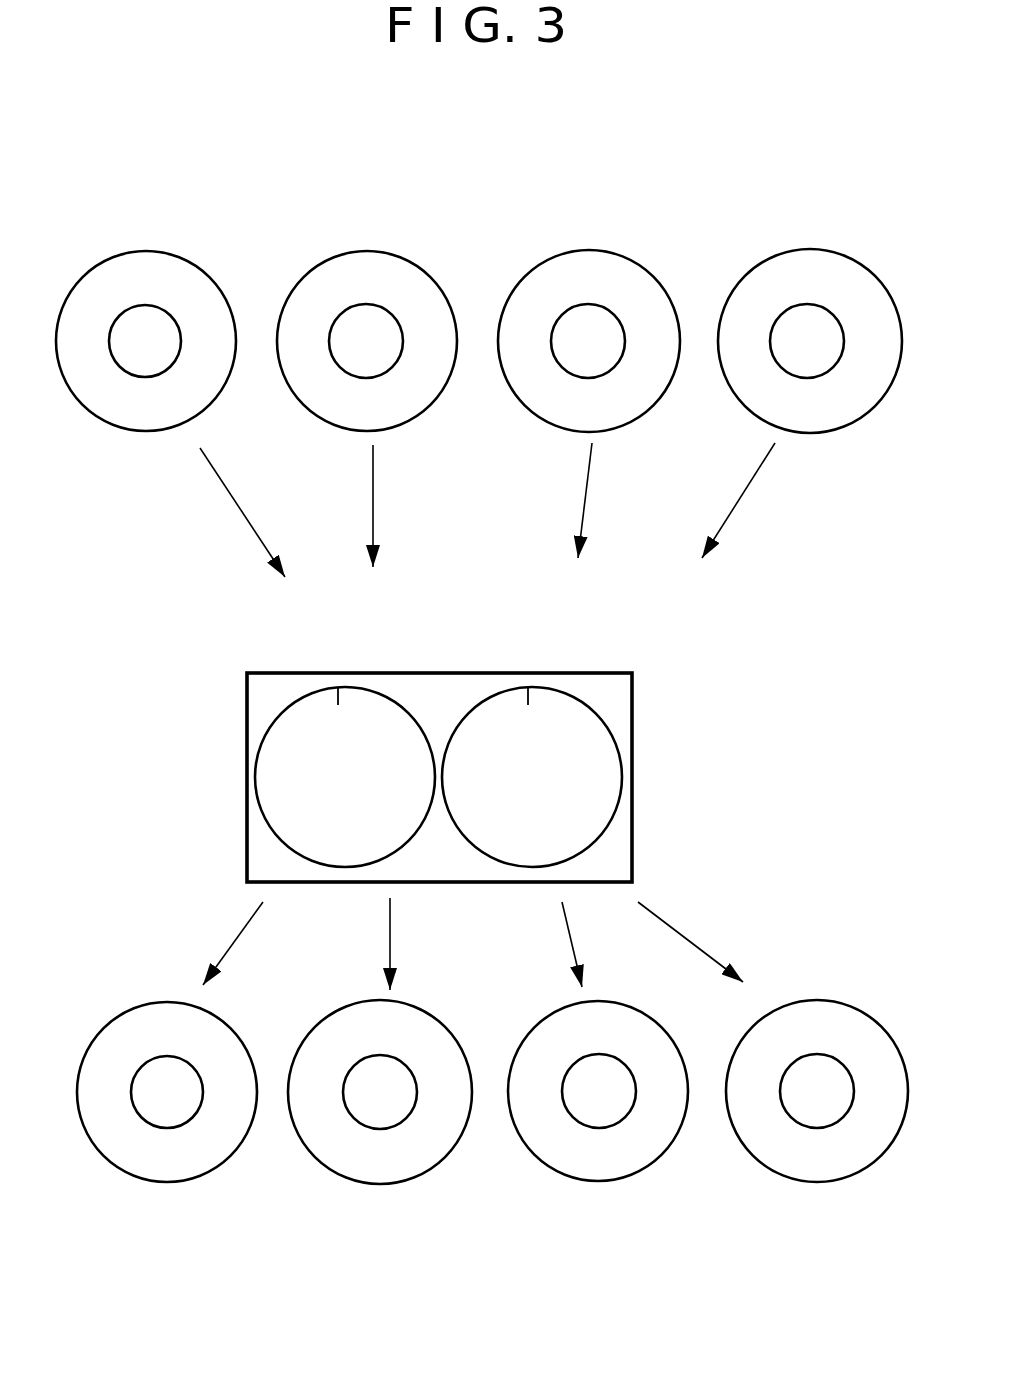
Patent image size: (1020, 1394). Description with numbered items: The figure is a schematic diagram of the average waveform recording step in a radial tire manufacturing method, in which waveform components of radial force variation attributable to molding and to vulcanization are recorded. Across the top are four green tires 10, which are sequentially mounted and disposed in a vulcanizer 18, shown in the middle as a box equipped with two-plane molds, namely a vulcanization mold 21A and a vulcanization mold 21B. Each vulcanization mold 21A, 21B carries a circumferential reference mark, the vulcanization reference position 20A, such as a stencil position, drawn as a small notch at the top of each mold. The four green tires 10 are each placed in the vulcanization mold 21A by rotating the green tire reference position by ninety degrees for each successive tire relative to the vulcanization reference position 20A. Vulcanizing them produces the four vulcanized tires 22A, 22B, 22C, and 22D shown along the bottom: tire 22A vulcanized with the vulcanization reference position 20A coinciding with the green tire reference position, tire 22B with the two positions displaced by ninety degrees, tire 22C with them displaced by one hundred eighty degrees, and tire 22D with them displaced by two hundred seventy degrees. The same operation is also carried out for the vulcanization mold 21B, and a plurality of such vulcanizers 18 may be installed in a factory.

The green tire 10 is at (191, 260).
The vulcanizer 18 is at (638, 777).
The vulcanization reference position 20A is at (334, 700).
The vulcanization mold 21A is at (266, 820).
The vulcanization mold 21B is at (603, 829).
The vulcanized tire 22A is at (200, 1181).
The vulcanized tire 22B is at (400, 1183).
The vulcanized tire 22C is at (625, 1180).
The vulcanized tire 22D is at (837, 1181).